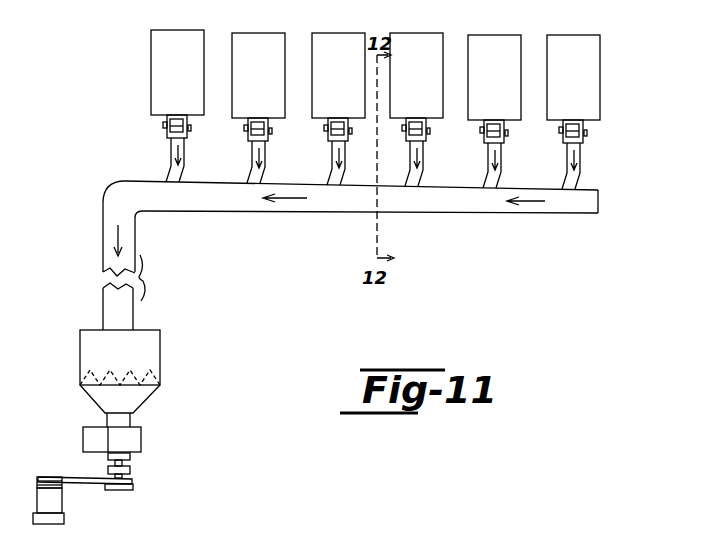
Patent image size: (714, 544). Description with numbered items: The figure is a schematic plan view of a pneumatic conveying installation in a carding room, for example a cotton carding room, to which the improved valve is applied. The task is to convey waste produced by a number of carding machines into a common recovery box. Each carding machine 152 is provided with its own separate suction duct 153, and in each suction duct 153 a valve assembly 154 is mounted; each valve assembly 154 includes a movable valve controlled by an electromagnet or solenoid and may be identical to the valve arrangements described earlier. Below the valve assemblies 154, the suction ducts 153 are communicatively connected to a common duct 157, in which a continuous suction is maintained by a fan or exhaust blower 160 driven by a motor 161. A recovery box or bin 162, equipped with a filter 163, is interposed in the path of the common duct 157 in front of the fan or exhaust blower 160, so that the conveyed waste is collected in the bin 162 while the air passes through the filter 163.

The carding machine 152 is at (398, 33).
The suction duct 153 is at (423, 168).
The valve assembly 154 is at (165, 126).
The common duct 157 is at (138, 237).
The fan or exhaust blower 160 is at (141, 436).
The motor 161 is at (62, 501).
The recovery box or bin 162 is at (160, 338).
The filter 163 is at (160, 375).